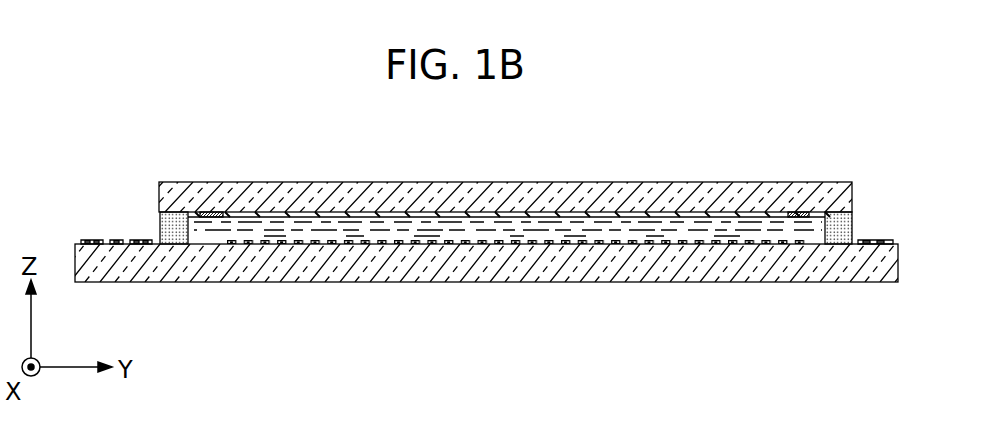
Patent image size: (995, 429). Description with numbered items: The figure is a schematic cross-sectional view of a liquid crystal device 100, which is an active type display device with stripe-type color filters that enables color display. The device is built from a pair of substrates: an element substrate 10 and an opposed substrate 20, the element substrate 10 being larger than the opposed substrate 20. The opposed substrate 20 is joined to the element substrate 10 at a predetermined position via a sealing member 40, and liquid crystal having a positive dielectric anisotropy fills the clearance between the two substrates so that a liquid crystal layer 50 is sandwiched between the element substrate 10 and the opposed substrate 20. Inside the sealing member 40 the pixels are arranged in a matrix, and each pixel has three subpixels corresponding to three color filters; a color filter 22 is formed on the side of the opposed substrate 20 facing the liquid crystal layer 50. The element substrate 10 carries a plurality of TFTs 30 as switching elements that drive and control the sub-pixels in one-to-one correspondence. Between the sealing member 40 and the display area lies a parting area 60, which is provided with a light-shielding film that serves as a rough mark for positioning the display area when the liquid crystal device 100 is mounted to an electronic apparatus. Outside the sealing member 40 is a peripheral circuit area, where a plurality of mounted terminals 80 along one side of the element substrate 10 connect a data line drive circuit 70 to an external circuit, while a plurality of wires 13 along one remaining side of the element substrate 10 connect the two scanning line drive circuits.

The liquid crystal device 100 is at (683, 132).
The element substrate 10 is at (705, 266).
The wires 13 is at (879, 240).
The opposed substrate 20 is at (477, 192).
The color filter 22 is at (598, 212).
The TFTs 30 is at (537, 244).
The sealing member 40 is at (171, 228).
The liquid crystal layer 50 is at (652, 232).
The parting area 60 is at (215, 212).
The data line drive circuit 70 is at (141, 240).
The mounted terminals 80 is at (94, 240).